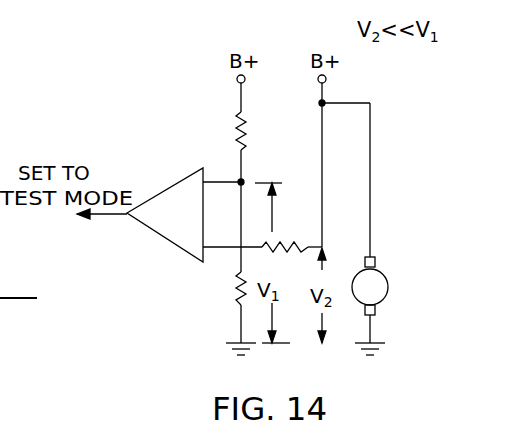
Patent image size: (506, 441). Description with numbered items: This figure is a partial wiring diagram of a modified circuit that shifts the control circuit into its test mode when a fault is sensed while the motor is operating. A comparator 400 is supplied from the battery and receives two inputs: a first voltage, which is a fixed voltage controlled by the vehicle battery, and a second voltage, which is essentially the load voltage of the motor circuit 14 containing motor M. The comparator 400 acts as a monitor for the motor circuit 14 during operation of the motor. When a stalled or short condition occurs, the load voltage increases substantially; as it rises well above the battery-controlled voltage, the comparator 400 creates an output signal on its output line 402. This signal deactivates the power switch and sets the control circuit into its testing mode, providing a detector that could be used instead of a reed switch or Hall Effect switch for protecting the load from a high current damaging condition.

The comparator 400 is at (180, 190).
The output line 402 is at (110, 217).
The motor circuit 14 is at (362, 103).